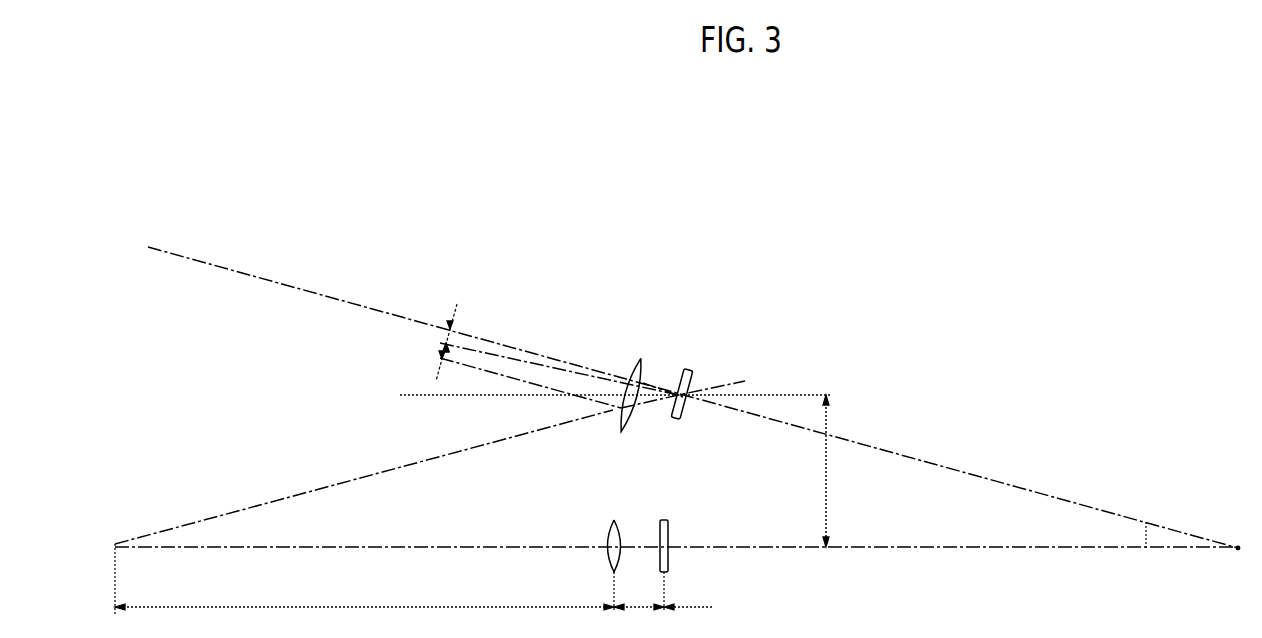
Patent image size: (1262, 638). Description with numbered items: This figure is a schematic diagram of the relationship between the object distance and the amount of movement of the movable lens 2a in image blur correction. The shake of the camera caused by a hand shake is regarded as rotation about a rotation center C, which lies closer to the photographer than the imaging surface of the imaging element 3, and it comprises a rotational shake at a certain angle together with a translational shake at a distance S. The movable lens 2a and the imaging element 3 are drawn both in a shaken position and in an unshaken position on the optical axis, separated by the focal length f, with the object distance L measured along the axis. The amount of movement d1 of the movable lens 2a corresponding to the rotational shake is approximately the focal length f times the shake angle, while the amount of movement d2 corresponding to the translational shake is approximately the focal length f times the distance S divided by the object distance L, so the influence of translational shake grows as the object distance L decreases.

The movable lens 2a is at (638, 366).
The imaging element 3 is at (687, 371).
The amount of movement d1 is at (444, 330).
The amount of movement d2 is at (440, 345).
The object distance L is at (364, 620).
The focal length f is at (663, 620).
The translational shake distance S is at (834, 471).
The rotation center C is at (1238, 546).